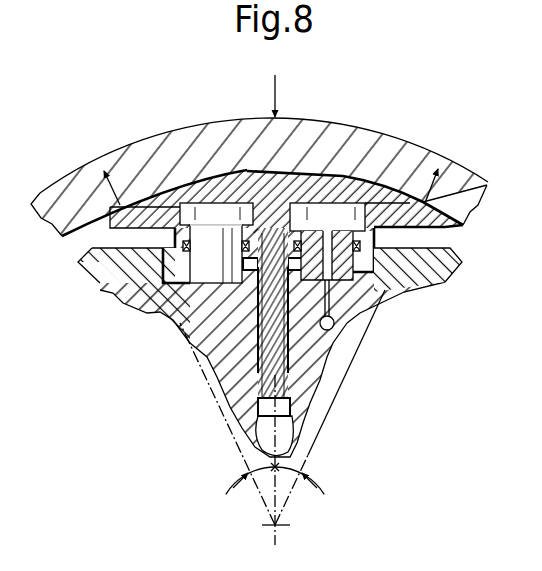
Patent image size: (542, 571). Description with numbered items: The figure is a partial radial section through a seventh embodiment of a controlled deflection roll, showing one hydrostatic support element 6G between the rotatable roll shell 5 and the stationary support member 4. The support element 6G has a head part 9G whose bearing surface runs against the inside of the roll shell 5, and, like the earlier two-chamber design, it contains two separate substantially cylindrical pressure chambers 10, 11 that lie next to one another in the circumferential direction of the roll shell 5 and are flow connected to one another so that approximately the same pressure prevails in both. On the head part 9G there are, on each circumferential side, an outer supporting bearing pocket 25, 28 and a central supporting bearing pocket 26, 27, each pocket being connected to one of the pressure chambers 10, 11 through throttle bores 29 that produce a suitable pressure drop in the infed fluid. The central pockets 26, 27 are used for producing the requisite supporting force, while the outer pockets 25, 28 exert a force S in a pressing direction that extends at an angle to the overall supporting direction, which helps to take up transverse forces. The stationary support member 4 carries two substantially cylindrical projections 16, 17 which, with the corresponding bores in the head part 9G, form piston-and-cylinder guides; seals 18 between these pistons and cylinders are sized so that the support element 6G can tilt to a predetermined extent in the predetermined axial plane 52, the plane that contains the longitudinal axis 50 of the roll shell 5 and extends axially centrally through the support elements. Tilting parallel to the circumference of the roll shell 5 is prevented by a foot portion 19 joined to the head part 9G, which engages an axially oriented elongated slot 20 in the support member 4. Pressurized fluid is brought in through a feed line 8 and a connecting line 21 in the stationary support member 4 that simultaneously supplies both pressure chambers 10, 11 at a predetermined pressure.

The stationary support member 4 is at (424, 280).
The roll shell 5 is at (468, 200).
The hydrostatic support element 6G is at (447, 231).
The feed line 8 is at (324, 347).
The head part 9G is at (118, 222).
The pressure chamber 10 is at (202, 182).
The pressure chamber 11 is at (364, 183).
The cylindrical projection 16 is at (235, 281).
The cylindrical projection 17 is at (353, 268).
The seal 18 is at (213, 277).
The foot portion 19 is at (259, 379).
The elongated slot 20 is at (290, 407).
The connecting line 21 is at (334, 323).
The outer supporting bearing pocket 25 is at (127, 207).
The central supporting bearing pocket 26 is at (248, 163).
The central supporting bearing pocket 27 is at (321, 167).
The outer supporting bearing pocket 28 is at (454, 180).
The throttle bore 29 is at (252, 200).
The longitudinal axis 50 is at (272, 528).
The predetermined axial plane 52 is at (278, 490).
The force S is at (100, 186).
The pressing force P is at (285, 94).